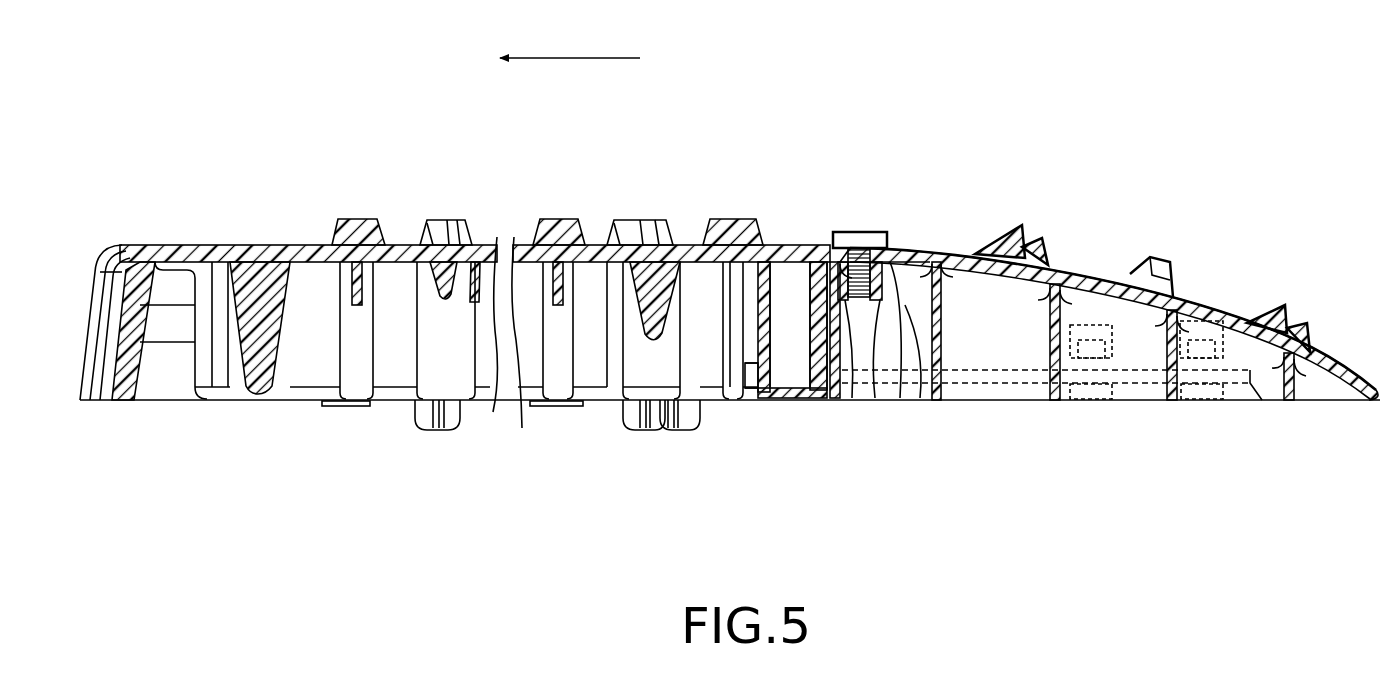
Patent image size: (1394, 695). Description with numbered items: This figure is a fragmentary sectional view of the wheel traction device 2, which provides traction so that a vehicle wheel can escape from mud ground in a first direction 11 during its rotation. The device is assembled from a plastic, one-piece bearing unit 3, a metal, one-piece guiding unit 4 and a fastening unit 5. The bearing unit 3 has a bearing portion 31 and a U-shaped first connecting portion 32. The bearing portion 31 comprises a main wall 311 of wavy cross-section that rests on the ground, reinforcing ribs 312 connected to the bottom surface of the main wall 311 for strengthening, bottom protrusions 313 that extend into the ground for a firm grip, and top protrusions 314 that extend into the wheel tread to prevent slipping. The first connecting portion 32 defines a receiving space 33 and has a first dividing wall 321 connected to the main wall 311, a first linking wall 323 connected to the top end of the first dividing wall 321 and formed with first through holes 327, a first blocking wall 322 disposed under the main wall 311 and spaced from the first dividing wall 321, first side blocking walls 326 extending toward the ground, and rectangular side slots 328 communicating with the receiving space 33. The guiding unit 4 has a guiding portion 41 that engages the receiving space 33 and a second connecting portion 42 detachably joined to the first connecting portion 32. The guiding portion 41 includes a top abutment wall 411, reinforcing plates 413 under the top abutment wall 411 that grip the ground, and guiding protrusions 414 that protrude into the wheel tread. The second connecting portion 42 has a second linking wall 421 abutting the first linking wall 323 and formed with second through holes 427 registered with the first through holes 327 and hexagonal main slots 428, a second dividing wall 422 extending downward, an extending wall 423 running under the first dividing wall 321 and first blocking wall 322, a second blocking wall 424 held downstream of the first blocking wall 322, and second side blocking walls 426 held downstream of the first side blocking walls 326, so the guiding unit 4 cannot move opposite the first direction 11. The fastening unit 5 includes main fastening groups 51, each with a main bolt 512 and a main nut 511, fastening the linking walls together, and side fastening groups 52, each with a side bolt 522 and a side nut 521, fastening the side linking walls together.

The wheel traction device 2 is at (1080, 148).
The bearing unit 3 is at (392, 210).
The guiding unit 4 is at (1199, 244).
The fastening unit 5 is at (870, 222).
The first direction 11 is at (575, 58).
The bearing portion 31 is at (316, 243).
The first connecting portion 32 is at (780, 243).
The receiving space 33 is at (795, 400).
The guiding portion 41 is at (1022, 220).
The second connecting portion 42 is at (757, 407).
The main fastening group 51 is at (860, 250).
The side fastening group 52 is at (1107, 408).
The main wall 311 is at (405, 248).
The reinforcing ribs 312 is at (560, 305).
The bottom protrusions 313 is at (437, 420).
The top protrusions 314 is at (640, 238).
The first dividing wall 321 is at (813, 310).
The first blocking wall 322 is at (763, 330).
The first linking wall 323 is at (820, 300).
The first side blocking walls 326 is at (1265, 400).
The first through holes 327 is at (885, 262).
The side slots 328 is at (1092, 325).
The top abutment wall 411 is at (1120, 250).
The reinforcing plates 413 is at (1053, 342).
The guiding protrusions 414 is at (1300, 323).
The second linking wall 421 is at (857, 320).
The second dividing wall 422 is at (850, 300).
The extending wall 423 is at (790, 410).
The second blocking wall 424 is at (760, 400).
The second side blocking walls 426 is at (1250, 400).
The second through holes 427 is at (903, 270).
The main slots 428 is at (903, 310).
The main nut 511 is at (880, 287).
The main bolt 512 is at (855, 245).
The side nut 521 is at (1107, 347).
The side bolt 522 is at (1080, 400).